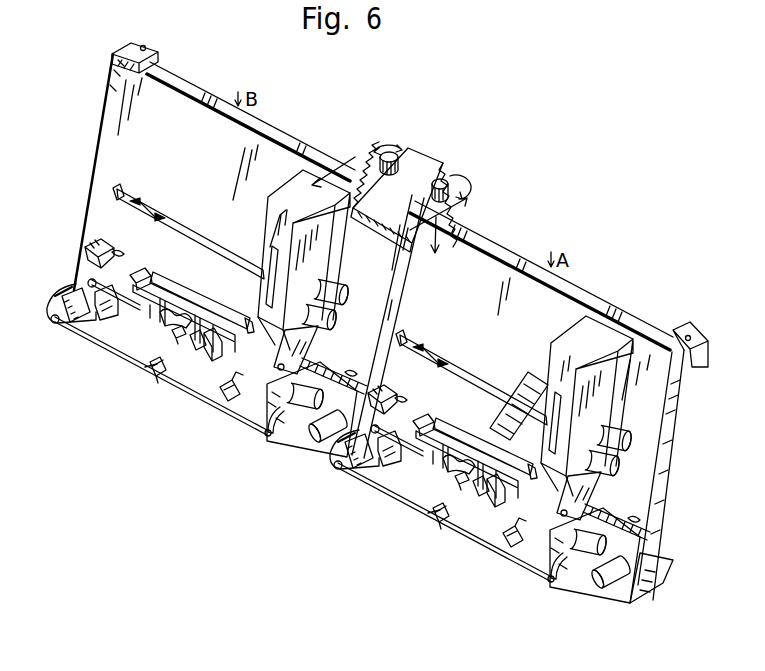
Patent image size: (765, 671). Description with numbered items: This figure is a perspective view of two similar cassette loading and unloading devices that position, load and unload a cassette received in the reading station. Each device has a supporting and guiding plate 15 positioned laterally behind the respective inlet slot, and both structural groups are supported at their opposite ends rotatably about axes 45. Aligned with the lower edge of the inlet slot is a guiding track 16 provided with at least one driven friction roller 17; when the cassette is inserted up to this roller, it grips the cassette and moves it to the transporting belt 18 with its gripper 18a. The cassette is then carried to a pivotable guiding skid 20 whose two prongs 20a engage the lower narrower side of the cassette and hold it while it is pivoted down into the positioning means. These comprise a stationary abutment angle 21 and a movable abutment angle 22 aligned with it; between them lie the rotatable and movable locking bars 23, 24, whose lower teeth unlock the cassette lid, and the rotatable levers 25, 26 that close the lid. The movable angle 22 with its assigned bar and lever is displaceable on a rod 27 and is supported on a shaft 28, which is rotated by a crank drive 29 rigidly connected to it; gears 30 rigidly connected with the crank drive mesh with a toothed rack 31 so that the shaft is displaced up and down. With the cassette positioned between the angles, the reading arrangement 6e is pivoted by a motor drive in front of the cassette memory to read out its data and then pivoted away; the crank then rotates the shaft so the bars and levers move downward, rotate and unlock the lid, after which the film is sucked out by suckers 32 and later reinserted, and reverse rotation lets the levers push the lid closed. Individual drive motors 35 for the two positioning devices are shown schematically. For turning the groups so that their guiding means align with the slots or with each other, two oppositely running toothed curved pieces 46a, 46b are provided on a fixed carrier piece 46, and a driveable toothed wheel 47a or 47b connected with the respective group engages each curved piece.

The supporting and guiding plate 15 is at (170, 82).
The axes 45 is at (143, 46).
The transporting belt 18 is at (173, 222).
The gripper 18a is at (114, 194).
The guiding track 16 is at (95, 244).
The driven friction roller 17 is at (126, 246).
The gears 30 is at (92, 279).
The rod 27 is at (140, 278).
The pivotable guiding skid 20 is at (178, 290).
The prongs 20a is at (246, 316).
The toothed rack 31 is at (90, 312).
The shaft 28 is at (114, 300).
The movable abutment angle 22 is at (148, 322).
The locking bar 24 is at (166, 326).
The rotatable lever 26 is at (180, 339).
The rotatable lever 25 is at (198, 350).
The locking bar 23 is at (214, 354).
The stationary abutment angle 21 is at (230, 395).
The suckers 32 is at (160, 378).
The crank drive 29 is at (272, 373).
The drive motors 35 is at (343, 298).
The reading arrangement 6e is at (522, 385).
The fixed carrier piece 46 is at (424, 168).
The toothed curved piece 46a is at (458, 217).
The toothed curved piece 46b is at (365, 197).
The driveable toothed wheel 47a is at (452, 180).
The driveable toothed wheel 47b is at (388, 146).